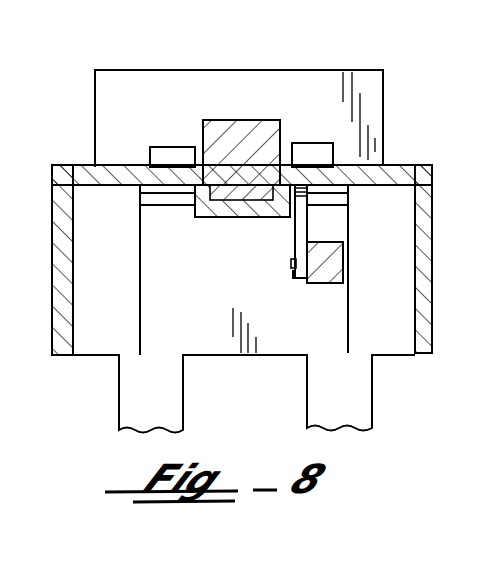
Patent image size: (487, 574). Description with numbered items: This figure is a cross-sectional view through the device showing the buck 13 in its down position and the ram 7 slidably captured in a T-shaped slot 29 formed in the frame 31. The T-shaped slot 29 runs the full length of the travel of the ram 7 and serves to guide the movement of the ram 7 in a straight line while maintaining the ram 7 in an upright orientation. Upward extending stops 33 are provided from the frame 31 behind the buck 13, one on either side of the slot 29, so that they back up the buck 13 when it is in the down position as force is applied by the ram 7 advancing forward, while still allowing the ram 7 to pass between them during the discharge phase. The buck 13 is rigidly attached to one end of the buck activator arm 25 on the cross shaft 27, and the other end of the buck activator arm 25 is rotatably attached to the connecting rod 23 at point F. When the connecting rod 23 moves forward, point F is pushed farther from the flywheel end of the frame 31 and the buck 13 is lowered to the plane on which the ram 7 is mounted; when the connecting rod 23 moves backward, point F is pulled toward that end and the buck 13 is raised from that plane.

The ram 7 is at (230, 119).
The buck 13 is at (380, 88).
The connecting rod 23 is at (318, 276).
The buck activator arm 25 is at (293, 238).
The cross shaft 27 is at (150, 201).
The T-shaped slot 29 is at (207, 218).
The frame 31 is at (433, 318).
The stops 33 is at (172, 147).
The point F is at (292, 264).